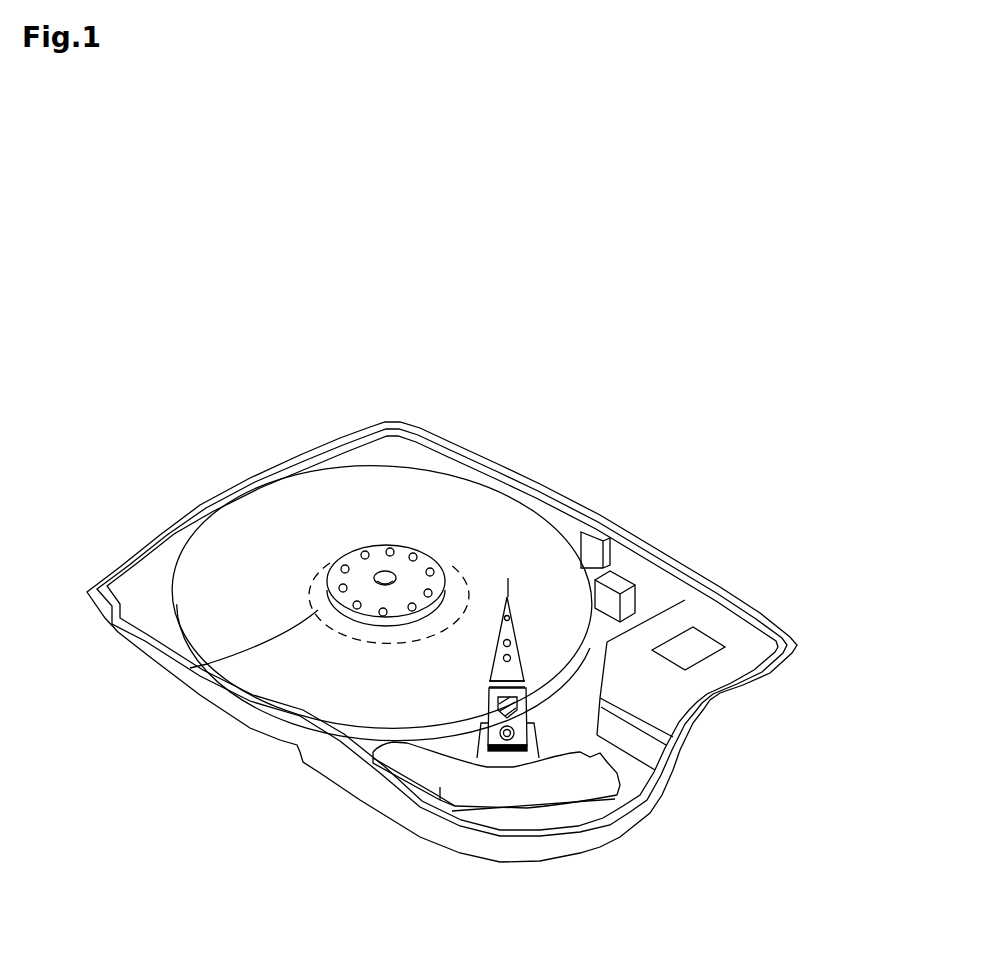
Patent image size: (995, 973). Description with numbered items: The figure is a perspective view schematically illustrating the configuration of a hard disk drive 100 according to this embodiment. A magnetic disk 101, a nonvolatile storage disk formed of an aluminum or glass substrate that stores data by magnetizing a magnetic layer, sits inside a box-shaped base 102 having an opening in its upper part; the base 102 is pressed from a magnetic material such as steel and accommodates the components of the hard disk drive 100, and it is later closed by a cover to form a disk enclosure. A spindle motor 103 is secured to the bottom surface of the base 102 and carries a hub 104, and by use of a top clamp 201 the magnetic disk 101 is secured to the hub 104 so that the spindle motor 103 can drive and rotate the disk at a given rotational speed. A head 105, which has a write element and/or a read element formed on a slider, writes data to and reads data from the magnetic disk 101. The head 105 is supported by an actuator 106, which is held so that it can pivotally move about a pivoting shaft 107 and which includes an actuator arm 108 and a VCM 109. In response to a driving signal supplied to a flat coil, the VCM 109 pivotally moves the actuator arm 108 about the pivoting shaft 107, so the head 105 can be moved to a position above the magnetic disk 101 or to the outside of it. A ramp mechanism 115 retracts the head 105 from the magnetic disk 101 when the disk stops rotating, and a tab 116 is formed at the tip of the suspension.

The hard disk drive 100 is at (858, 471).
The magnetic disk 101 is at (287, 505).
The base 102 is at (608, 832).
The spindle motor 103 is at (421, 531).
The hub 104 is at (192, 664).
The head 105 is at (512, 623).
The actuator 106 is at (838, 792).
The pivoting shaft 107 is at (507, 742).
The actuator arm 108 is at (586, 768).
The VCM (voice coil motor) 109 is at (600, 779).
The ramp mechanism 115 is at (630, 605).
The tab 116 is at (508, 580).
The top clamp 201 is at (372, 548).